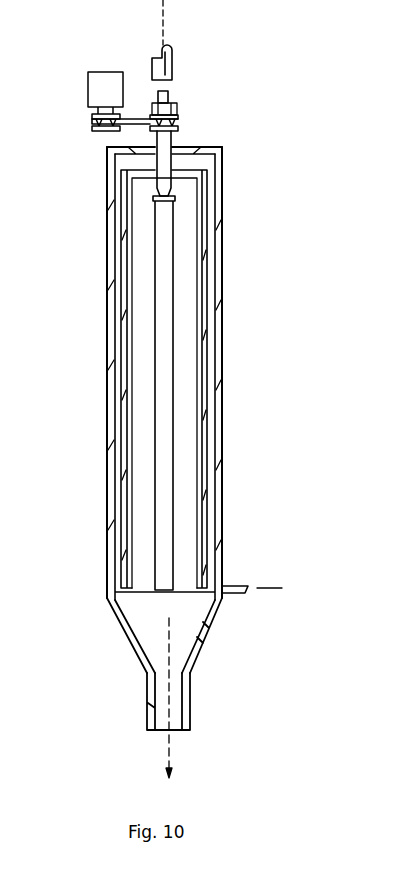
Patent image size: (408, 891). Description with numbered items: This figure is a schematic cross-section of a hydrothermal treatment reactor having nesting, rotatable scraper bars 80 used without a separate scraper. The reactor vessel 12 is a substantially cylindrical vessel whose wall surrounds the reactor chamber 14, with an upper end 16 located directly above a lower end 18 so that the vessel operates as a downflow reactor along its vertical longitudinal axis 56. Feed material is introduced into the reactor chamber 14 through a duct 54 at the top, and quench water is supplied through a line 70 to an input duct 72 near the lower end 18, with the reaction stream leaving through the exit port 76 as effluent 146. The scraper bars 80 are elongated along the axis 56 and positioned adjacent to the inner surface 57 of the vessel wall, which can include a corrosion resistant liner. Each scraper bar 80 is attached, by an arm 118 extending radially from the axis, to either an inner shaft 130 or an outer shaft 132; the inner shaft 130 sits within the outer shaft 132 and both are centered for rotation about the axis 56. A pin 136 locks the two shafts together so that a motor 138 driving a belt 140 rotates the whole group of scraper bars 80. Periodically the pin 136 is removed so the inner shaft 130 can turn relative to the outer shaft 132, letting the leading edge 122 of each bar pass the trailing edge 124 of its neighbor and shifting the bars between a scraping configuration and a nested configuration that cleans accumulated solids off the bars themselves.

The reactor vessel 12 is at (224, 283).
The reactor chamber 14 is at (148, 337).
The end 16 is at (222, 147).
The end 18 is at (213, 655).
The duct 54 is at (153, 72).
The longitudinal axis 56 is at (165, 16).
The inner surface 57 is at (128, 512).
The line 70 is at (282, 588).
The input duct 72 is at (233, 595).
The exit port 76 is at (172, 733).
The scraper bars 80 is at (128, 210).
The arm 118 is at (130, 153).
The leading edge 122 is at (110, 272).
The trailing edge 124 is at (200, 398).
The inner shaft 130 is at (168, 93).
The outer shaft 132 is at (180, 115).
The pin 136 is at (152, 108).
The motor 138 is at (88, 88).
The belt 140 is at (130, 125).
The effluent 146 is at (168, 760).